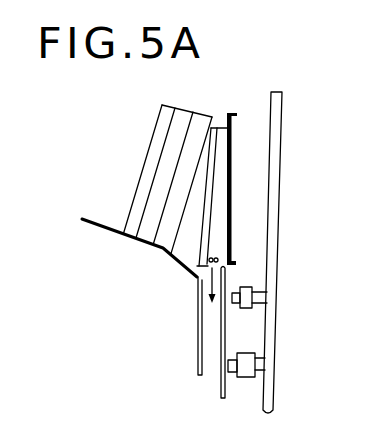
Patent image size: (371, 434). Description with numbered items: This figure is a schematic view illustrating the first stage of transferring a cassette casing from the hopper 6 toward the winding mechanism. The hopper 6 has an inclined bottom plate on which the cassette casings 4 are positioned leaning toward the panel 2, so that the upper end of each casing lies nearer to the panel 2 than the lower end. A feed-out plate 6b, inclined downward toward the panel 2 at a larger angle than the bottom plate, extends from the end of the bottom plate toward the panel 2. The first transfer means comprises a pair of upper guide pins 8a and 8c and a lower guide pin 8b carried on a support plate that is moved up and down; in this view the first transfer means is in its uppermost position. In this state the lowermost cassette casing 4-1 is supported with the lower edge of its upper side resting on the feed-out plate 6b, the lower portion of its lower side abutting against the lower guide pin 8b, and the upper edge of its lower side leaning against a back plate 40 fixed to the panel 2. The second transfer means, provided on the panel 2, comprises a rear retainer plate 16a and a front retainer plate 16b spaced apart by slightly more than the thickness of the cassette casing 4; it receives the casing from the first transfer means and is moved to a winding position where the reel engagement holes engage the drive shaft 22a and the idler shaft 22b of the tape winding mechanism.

The panel 2 is at (283, 118).
The cassette casing 4 is at (168, 102).
The lowermost cassette casing 4-1 is at (214, 199).
The back plate 40 is at (232, 157).
The hopper 6 is at (114, 241).
The feed-out plate 6b is at (176, 257).
The upper guide pin 8a is at (225, 112).
The lower guide pin 8b is at (213, 258).
The upper guide pin 8c is at (226, 90).
The rear retainer plate 16a is at (197, 355).
The front retainer plate 16b is at (221, 389).
The drive shaft 22a is at (257, 353).
The idler shaft 22b is at (253, 287).